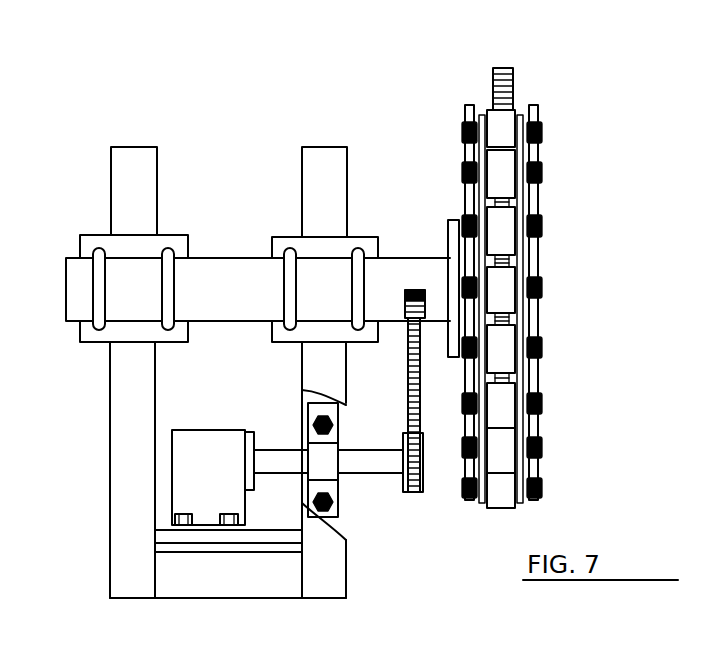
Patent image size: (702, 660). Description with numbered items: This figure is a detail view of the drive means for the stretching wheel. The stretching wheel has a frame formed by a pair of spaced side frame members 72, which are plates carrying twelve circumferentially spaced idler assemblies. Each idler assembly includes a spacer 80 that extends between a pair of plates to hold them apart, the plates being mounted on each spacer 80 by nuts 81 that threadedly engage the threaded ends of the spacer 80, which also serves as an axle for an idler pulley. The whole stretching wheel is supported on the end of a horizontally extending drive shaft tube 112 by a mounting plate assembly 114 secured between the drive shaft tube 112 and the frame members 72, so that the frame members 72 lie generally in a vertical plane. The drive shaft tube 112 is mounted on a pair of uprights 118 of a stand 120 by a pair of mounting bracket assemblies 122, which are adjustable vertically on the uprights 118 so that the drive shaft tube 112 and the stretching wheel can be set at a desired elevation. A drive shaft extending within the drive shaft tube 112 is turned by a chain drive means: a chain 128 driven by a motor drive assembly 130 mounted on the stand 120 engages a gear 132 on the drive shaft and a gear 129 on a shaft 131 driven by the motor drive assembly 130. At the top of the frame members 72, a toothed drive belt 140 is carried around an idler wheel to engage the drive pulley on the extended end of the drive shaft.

The side frame member 72 is at (470, 105).
The spacer 80 is at (503, 122).
The nut 81 is at (466, 130).
The drive shaft tube 112 is at (385, 272).
The mounting plate assembly 114 is at (452, 220).
The upright 118 is at (137, 158).
The stand 120 is at (100, 393).
The mounting bracket assembly 122 is at (152, 247).
The chain 128 is at (408, 393).
The gear 129 is at (423, 488).
The motor drive assembly 130 is at (195, 447).
The shaft 131 is at (368, 462).
The gear 132 is at (432, 270).
The drive belt 140 is at (503, 68).